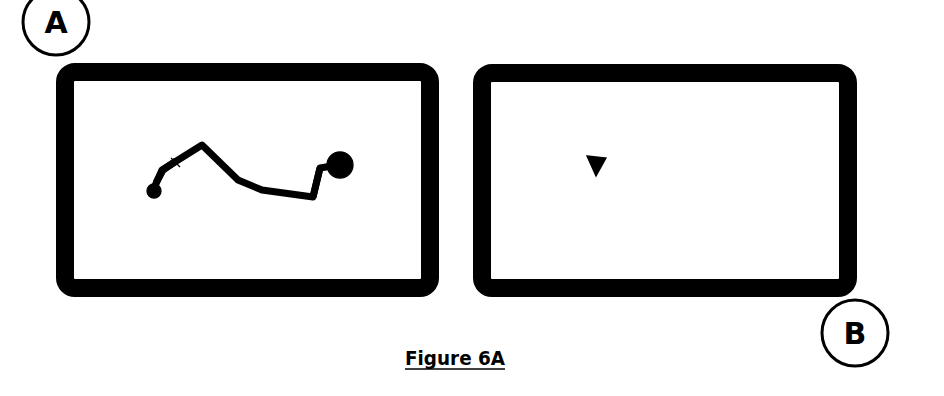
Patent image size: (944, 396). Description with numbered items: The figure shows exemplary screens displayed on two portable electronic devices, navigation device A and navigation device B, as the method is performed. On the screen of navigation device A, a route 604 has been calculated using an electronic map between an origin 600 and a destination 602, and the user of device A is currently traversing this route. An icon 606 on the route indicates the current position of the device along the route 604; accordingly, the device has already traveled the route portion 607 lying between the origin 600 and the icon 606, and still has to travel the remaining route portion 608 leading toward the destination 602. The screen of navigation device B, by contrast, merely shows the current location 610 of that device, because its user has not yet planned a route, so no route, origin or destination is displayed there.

The origin 600 is at (154, 199).
The destination 602 is at (339, 151).
The route 604 is at (259, 195).
The icon 606 is at (177, 158).
The route portion 607 is at (153, 170).
The route portion 608 is at (311, 190).
The current location 610 is at (598, 155).